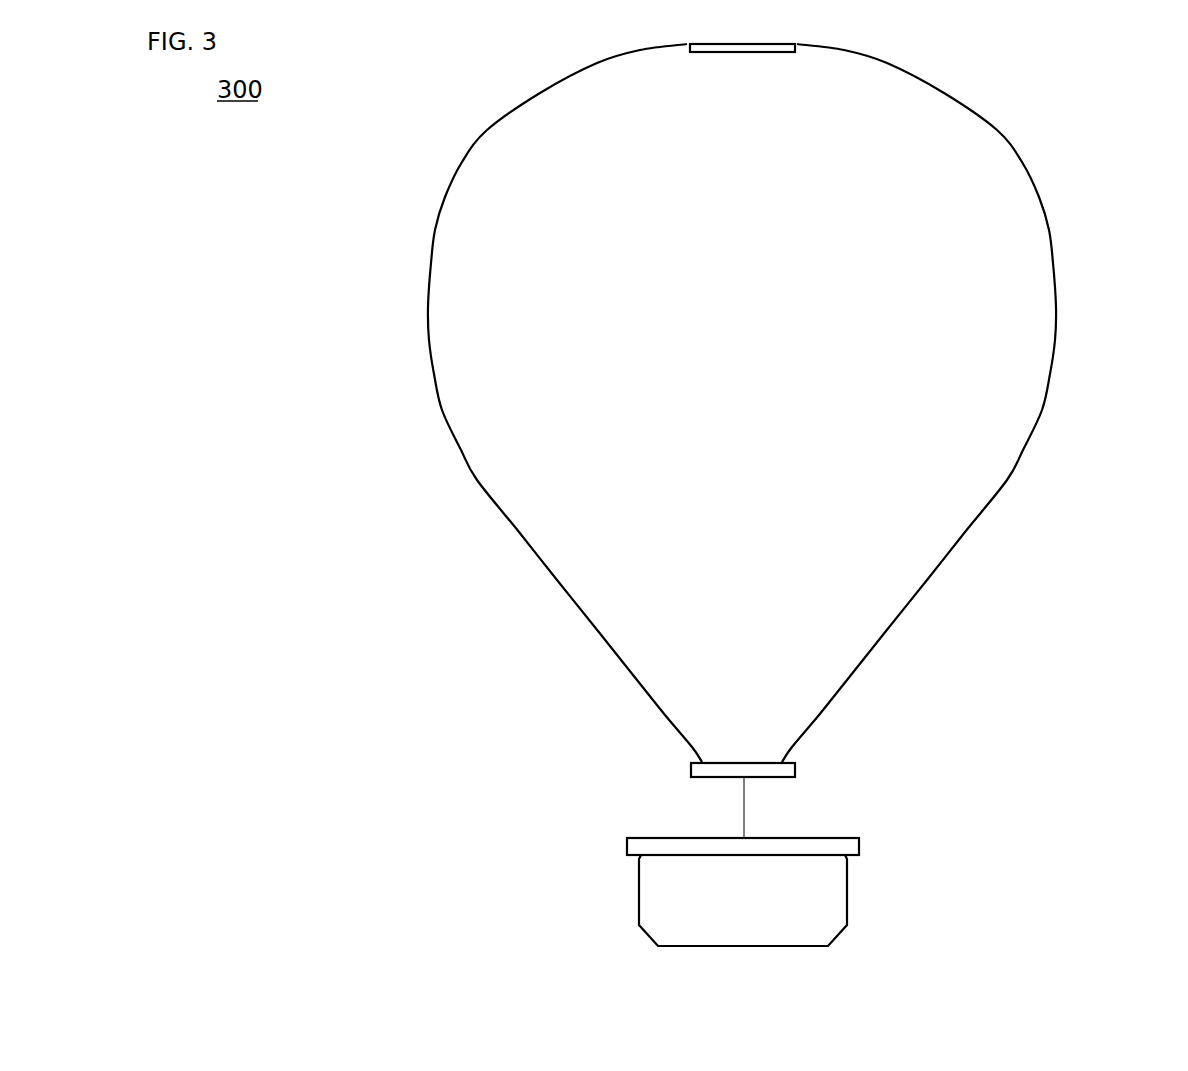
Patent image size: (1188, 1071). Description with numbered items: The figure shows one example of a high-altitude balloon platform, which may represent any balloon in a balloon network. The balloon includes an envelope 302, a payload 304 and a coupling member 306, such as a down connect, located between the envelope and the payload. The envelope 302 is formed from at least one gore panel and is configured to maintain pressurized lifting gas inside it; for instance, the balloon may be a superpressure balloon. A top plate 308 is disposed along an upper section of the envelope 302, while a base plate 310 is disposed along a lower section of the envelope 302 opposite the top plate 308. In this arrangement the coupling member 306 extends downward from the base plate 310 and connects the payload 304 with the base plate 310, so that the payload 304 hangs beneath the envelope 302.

The envelope 302 is at (1043, 401).
The payload 304 is at (847, 895).
The coupling member 306 is at (745, 805).
The top plate 308 is at (797, 46).
The base plate 310 is at (797, 767).